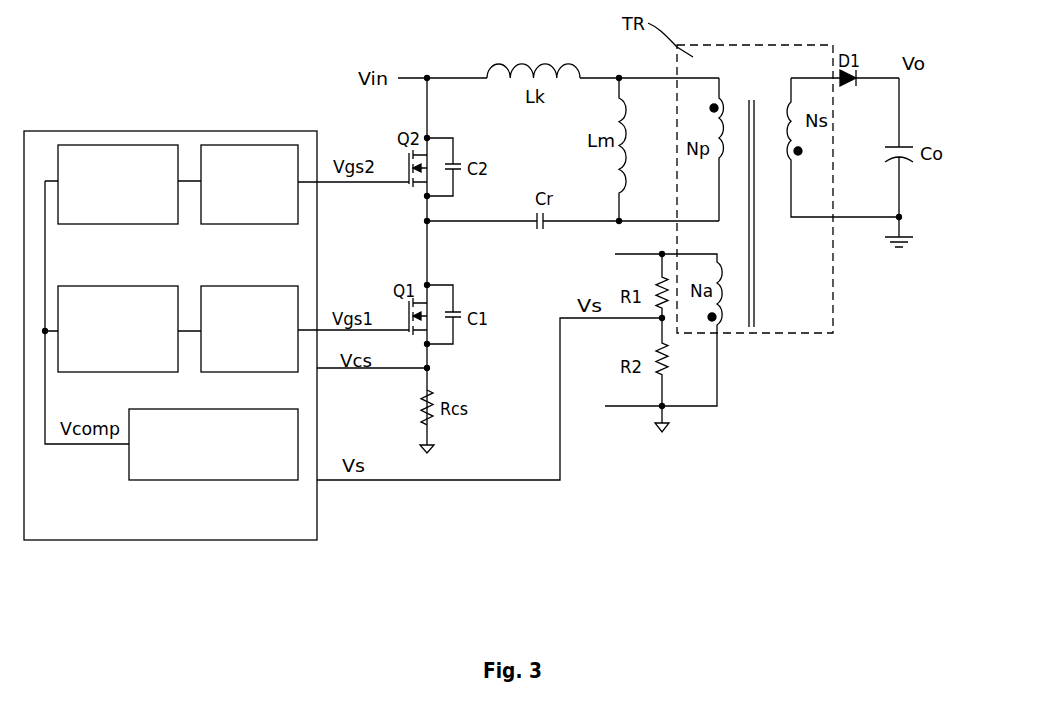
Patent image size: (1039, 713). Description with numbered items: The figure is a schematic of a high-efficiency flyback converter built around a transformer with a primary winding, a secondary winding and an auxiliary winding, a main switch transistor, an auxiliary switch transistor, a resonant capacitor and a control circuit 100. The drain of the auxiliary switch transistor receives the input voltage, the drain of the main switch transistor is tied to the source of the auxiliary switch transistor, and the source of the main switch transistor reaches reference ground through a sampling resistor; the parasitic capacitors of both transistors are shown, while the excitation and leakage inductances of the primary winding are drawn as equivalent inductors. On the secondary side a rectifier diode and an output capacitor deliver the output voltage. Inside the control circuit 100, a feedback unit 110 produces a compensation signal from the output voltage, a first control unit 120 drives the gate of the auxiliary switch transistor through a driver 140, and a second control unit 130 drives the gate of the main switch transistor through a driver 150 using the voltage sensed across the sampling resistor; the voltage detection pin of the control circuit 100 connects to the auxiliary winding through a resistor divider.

The control circuit 100 is at (242, 525).
The feedback unit 110 is at (200, 466).
The first control unit 120 is at (133, 218).
The second control unit 130 is at (133, 365).
The driver 140 is at (233, 203).
The driver 150 is at (233, 350).